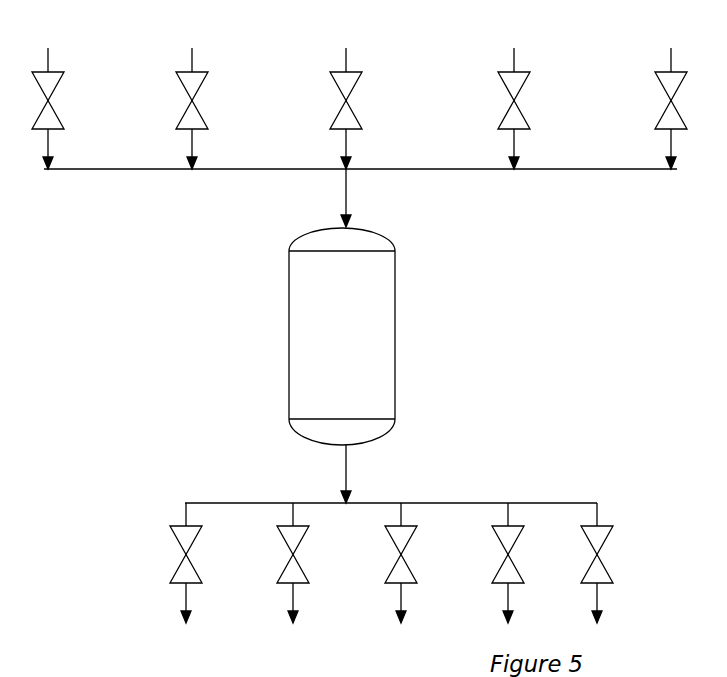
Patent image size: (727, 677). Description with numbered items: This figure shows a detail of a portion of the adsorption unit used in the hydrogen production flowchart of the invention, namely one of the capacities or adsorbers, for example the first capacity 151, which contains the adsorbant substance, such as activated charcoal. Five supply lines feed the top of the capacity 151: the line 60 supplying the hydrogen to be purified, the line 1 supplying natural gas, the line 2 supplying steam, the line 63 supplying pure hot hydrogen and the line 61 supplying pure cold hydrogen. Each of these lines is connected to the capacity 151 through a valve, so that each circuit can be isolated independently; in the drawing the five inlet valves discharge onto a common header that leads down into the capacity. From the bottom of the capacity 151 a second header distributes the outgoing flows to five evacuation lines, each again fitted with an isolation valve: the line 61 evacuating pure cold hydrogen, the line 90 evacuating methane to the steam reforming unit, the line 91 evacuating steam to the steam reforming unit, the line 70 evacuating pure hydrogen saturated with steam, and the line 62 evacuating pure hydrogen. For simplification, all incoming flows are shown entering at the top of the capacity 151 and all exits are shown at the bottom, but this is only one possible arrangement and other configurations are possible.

The line supplying hydrogen to be purified 60 is at (48, 91).
The natural gas line 1 is at (187, 91).
The steam line 2 is at (346, 91).
The pure hot hydrogen line 63 is at (511, 91).
The pure cold hydrogen line 61 is at (414, 324).
The first adsorber capacity 151 is at (373, 373).
The methane evacuation line 90 is at (288, 569).
The steam evacuation line 91 is at (391, 569).
The pure hydrogen saturated with steam line 70 is at (500, 569).
The pure hydrogen evacuation line 62 is at (589, 569).